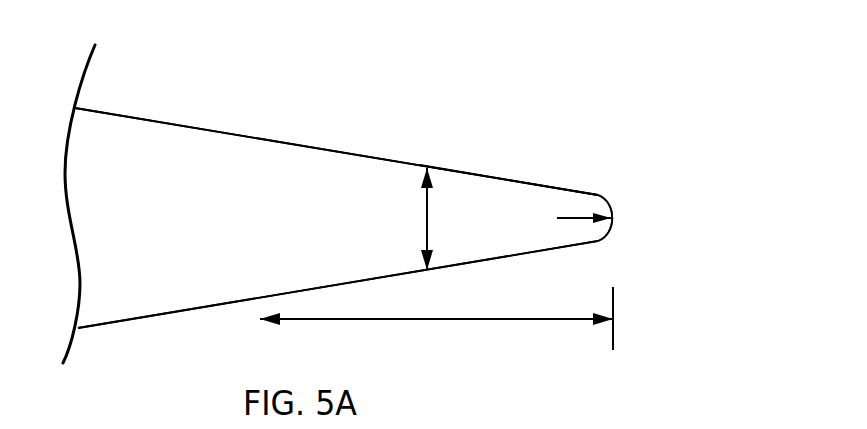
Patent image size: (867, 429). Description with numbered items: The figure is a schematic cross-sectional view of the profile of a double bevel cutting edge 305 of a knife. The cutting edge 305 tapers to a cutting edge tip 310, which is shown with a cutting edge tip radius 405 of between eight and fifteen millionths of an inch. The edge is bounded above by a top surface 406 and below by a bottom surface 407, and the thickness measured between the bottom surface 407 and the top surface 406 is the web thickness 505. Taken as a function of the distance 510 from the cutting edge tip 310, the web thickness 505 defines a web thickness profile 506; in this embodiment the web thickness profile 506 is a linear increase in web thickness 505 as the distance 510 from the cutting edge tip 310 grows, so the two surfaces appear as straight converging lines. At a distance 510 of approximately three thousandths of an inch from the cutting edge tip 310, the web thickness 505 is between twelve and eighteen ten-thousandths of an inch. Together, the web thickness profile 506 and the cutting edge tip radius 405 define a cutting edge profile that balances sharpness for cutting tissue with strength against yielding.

The cutting edge 305 is at (243, 134).
The cutting edge tip 310 is at (612, 218).
The cutting edge tip radius 405 is at (585, 216).
The top surface 406 is at (333, 150).
The bottom surface 407 is at (512, 256).
The web thickness 505 is at (427, 221).
The web thickness profile 506 is at (481, 172).
The distance 510 is at (473, 319).